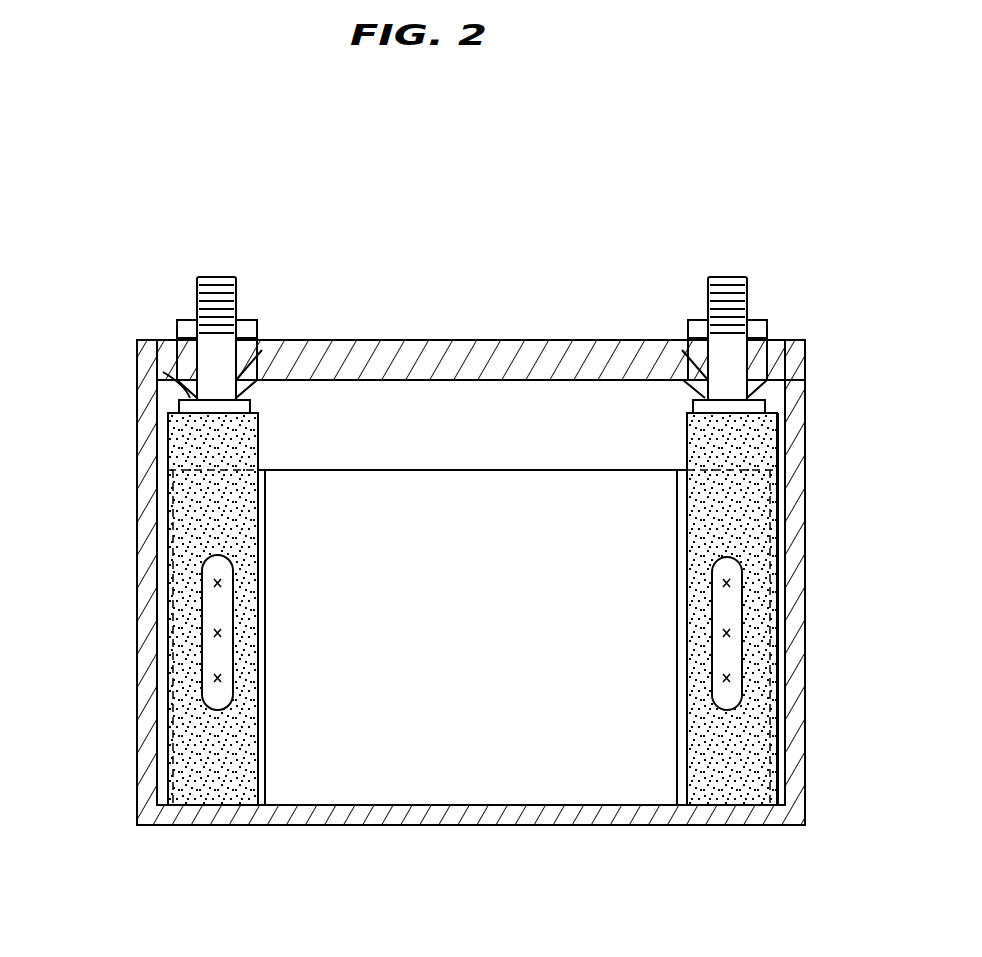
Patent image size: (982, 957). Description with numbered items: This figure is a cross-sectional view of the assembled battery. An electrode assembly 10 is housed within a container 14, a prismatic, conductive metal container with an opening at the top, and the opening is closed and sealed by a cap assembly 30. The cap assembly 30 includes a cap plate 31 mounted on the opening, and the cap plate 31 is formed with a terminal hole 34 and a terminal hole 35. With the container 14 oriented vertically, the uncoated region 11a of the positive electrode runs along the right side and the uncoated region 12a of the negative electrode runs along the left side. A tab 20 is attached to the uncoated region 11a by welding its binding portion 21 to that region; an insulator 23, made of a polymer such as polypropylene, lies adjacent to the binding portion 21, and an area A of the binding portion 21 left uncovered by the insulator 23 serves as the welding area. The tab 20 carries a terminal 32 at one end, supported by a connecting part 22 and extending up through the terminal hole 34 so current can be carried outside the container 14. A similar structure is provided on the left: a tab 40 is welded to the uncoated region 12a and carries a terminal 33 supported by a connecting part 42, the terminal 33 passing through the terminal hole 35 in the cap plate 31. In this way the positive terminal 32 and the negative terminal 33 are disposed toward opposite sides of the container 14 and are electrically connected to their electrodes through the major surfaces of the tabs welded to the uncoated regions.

The electrode assembly 10 is at (623, 780).
The uncoated region of the positive electrode 11a is at (776, 649).
The uncoated region of the negative electrode 12a is at (208, 807).
The container 14 is at (807, 517).
The tab 20 is at (782, 382).
The binding portion 21 is at (777, 773).
The connecting part 22 is at (767, 407).
The insulator 23 is at (758, 543).
The cap assembly 30 is at (471, 311).
The cap plate 31 is at (413, 340).
The terminal 32 is at (727, 277).
The terminal 33 is at (215, 277).
The terminal hole 34 is at (683, 363).
The terminal hole 35 is at (263, 353).
The tab 40 is at (172, 406).
The connecting part 42 is at (182, 400).
The area A is at (735, 650).